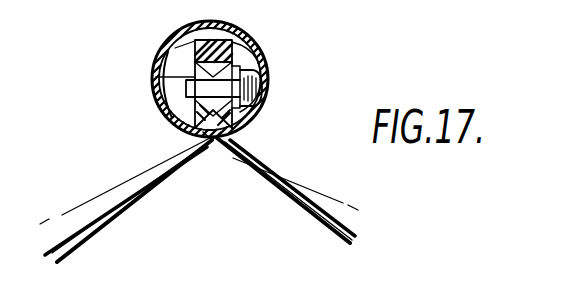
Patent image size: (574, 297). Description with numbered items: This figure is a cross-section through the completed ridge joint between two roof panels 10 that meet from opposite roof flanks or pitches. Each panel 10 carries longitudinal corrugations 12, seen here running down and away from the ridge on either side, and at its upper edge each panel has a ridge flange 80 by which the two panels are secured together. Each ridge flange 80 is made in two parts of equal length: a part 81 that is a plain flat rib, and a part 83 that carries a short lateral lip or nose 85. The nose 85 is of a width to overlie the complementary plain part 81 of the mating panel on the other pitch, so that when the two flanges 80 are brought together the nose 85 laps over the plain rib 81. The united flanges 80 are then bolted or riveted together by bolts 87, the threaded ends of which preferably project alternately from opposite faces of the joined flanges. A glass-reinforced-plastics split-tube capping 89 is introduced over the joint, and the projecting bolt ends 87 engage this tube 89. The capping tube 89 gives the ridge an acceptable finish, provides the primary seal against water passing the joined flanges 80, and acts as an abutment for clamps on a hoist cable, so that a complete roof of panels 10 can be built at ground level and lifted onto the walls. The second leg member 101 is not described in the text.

The panel 10 is at (127, 207).
The second leg member 101 is at (268, 190).
The longitudinal corrugation 12 is at (105, 194).
The ridge flange 80 is at (207, 168).
The plain flat rib part 81 is at (268, 80).
The flange part with nose 83 is at (165, 57).
The lateral lip or nose 85 is at (255, 43).
The bolt 87 is at (255, 112).
The split-tube capping 89 is at (156, 93).